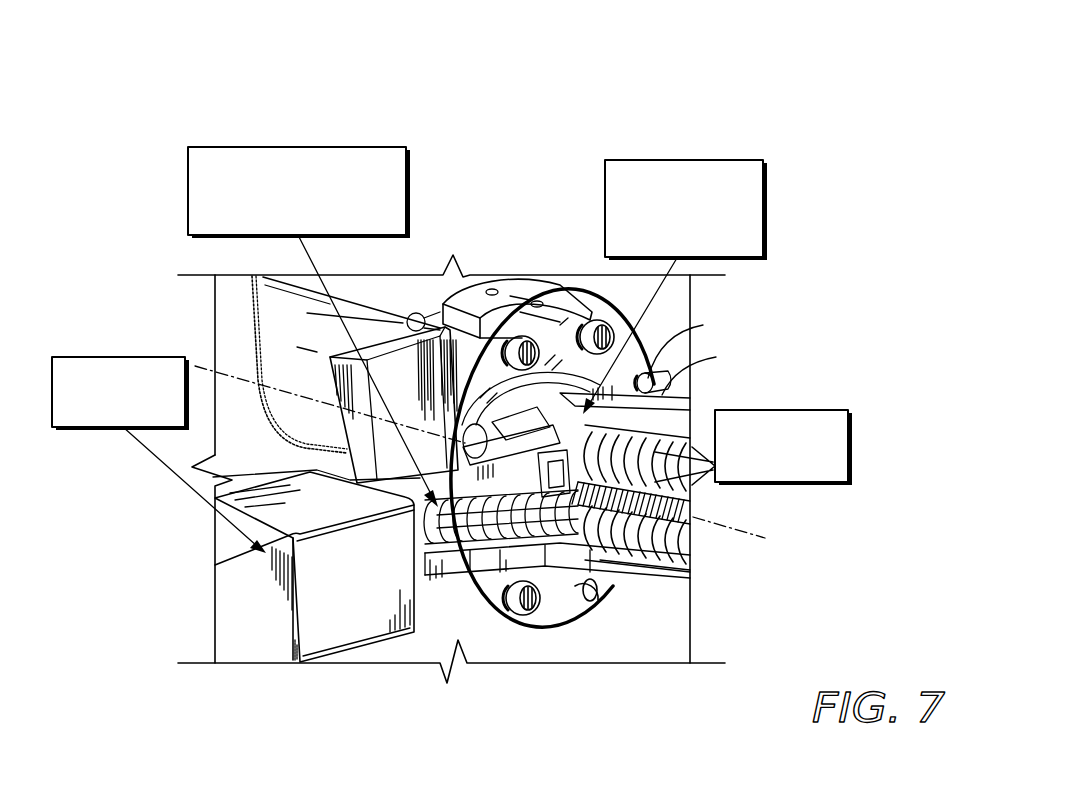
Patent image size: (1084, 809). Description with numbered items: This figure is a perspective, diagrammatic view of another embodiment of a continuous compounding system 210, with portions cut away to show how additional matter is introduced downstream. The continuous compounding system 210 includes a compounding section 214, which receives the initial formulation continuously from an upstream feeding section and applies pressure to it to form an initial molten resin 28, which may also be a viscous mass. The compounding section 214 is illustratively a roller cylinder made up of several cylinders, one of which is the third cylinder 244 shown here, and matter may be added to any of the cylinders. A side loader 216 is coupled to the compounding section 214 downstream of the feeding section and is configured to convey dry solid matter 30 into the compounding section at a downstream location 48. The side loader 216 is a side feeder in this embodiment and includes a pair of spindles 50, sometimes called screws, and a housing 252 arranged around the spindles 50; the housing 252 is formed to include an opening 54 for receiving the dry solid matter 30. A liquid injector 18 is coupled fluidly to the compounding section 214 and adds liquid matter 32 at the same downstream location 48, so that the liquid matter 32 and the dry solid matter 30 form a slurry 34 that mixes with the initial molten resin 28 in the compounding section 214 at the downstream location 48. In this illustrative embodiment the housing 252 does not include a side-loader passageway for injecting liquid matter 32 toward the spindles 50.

The continuous compounding system 210 is at (395, 110).
The dry solid matter 30 is at (247, 146).
The liquid injector 18 is at (663, 160).
The side loader 216 is at (128, 355).
The slurry 34 is at (770, 410).
The opening 54 is at (432, 469).
The compounding section 214 is at (557, 383).
The third cylinder 244 is at (566, 576).
The downstream location 48 is at (703, 325).
The initial molten resin 28 is at (716, 357).
The housing 252 is at (488, 579).
The spindles 50 is at (453, 556).
The liquid matter 32 is at (702, 550).